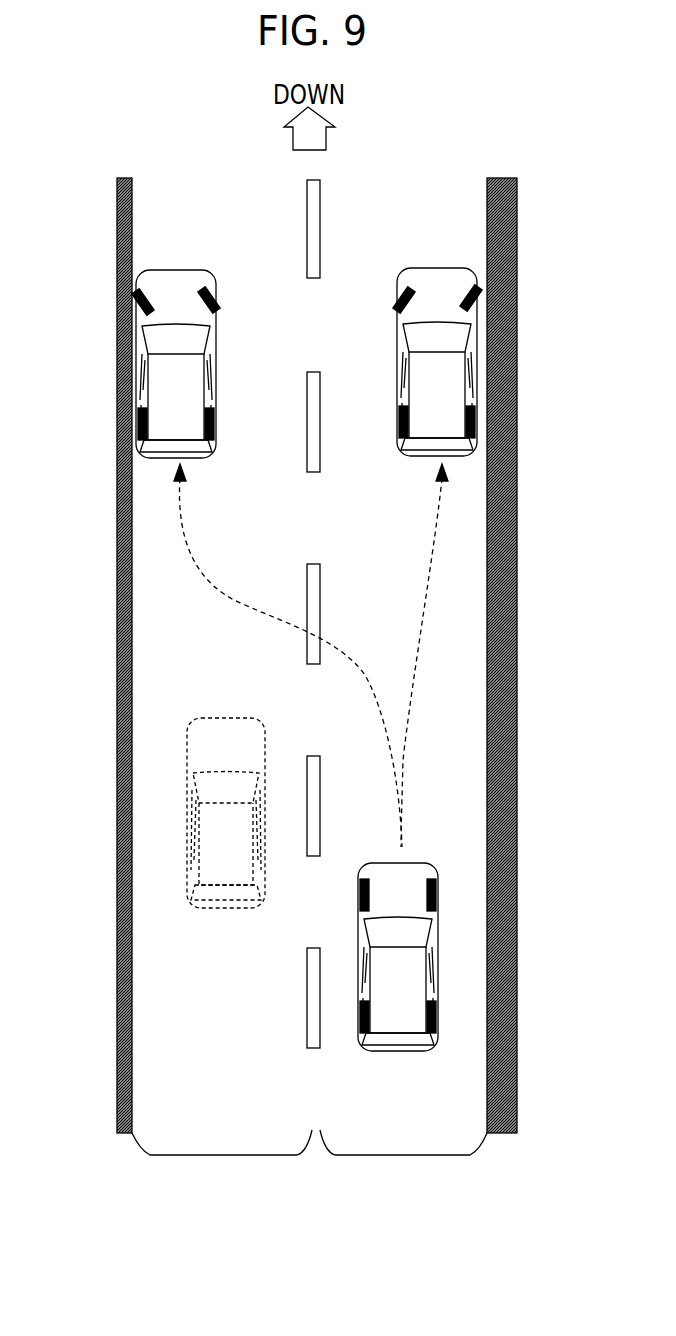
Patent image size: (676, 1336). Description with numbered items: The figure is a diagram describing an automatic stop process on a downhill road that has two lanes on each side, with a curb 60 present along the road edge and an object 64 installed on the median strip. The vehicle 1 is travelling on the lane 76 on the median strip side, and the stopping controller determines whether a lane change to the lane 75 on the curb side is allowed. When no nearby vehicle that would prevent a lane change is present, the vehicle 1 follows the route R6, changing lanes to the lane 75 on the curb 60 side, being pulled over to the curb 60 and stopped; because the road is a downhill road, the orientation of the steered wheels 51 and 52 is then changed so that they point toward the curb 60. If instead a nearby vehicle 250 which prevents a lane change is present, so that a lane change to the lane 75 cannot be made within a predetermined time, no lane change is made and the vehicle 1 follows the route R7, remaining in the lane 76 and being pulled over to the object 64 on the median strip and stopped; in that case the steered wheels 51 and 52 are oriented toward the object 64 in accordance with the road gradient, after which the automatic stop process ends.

The vehicle 1 is at (183, 387).
The steered wheel 51 is at (147, 300).
The steered wheel 52 is at (211, 298).
The curb 60 is at (124, 241).
The object 64 is at (497, 254).
The lane 75 is at (222, 1155).
The lane 76 is at (400, 1155).
The nearby vehicle 250 is at (225, 860).
The route R6 is at (288, 655).
The route R7 is at (415, 655).